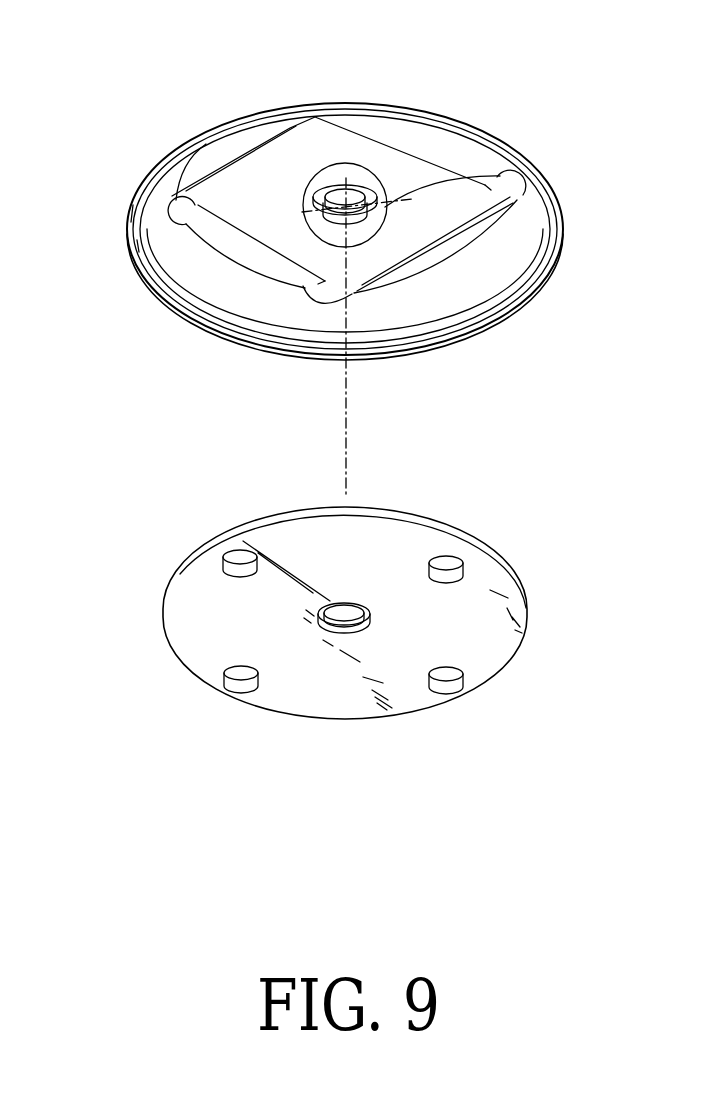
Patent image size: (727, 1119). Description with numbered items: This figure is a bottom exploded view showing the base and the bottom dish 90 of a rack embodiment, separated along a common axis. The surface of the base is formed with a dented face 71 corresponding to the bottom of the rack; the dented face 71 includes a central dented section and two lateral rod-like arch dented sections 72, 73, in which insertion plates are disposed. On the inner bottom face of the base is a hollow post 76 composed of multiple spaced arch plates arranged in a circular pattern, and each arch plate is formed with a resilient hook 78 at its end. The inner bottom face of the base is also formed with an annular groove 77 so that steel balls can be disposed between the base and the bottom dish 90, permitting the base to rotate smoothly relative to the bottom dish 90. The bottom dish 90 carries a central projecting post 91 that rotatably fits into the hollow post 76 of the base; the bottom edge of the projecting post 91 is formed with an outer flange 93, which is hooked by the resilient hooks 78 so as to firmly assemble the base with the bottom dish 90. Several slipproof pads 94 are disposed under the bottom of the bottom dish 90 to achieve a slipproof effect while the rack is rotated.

The dented face 71 is at (410, 157).
The arch dented section 72 is at (183, 200).
The arch dented section 73 is at (521, 188).
The hollow post 76 is at (351, 186).
The annular groove 77 is at (500, 291).
The resilient hook 78 is at (485, 188).
The bottom dish 90 is at (507, 580).
The projecting post 91 is at (357, 633).
The outer flange 93 is at (337, 630).
The slipproof pad 94 is at (238, 568).